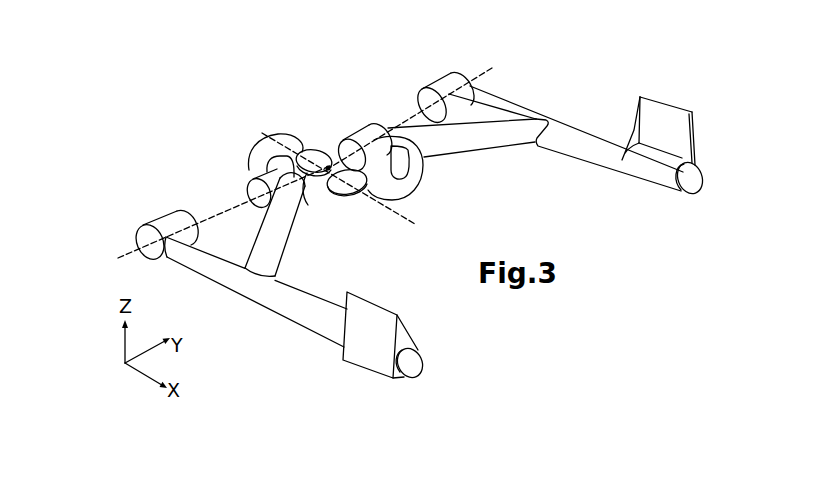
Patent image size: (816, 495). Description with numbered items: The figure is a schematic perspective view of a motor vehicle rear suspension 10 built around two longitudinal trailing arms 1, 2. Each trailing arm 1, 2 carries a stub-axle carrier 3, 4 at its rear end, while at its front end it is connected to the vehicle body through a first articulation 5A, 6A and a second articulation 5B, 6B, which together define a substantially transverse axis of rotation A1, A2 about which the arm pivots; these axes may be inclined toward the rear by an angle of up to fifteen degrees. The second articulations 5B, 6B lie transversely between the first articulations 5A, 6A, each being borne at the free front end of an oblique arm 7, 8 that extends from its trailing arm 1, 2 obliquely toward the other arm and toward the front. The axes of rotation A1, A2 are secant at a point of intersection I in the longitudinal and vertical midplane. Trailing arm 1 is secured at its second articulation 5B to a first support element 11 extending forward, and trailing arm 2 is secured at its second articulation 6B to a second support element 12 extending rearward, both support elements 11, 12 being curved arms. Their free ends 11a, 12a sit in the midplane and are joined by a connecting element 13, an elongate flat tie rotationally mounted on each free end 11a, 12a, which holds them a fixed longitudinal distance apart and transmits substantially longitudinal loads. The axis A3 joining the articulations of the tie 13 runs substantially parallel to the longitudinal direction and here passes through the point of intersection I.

The trailing arm 1 is at (218, 266).
The trailing arm 2 is at (572, 146).
The stub-axle carrier 3 is at (355, 352).
The stub-axle carrier 4 is at (663, 115).
The first articulation 5A is at (167, 224).
The second articulation 5B is at (244, 193).
The first articulation 6A is at (447, 83).
The second articulation 6B is at (363, 120).
The oblique arm 7 is at (268, 252).
The oblique arm 8 is at (500, 145).
The rear suspension 10 is at (559, 69).
The first support element 11 is at (253, 147).
The free end 11a is at (325, 175).
The second support element 12 is at (424, 158).
The free end 12a is at (365, 195).
The connecting element 13 is at (317, 150).
The point of intersection I is at (329, 163).
The axis of rotation A1 is at (131, 251).
The axis of rotation A2 is at (477, 78).
The axis A3 is at (408, 218).